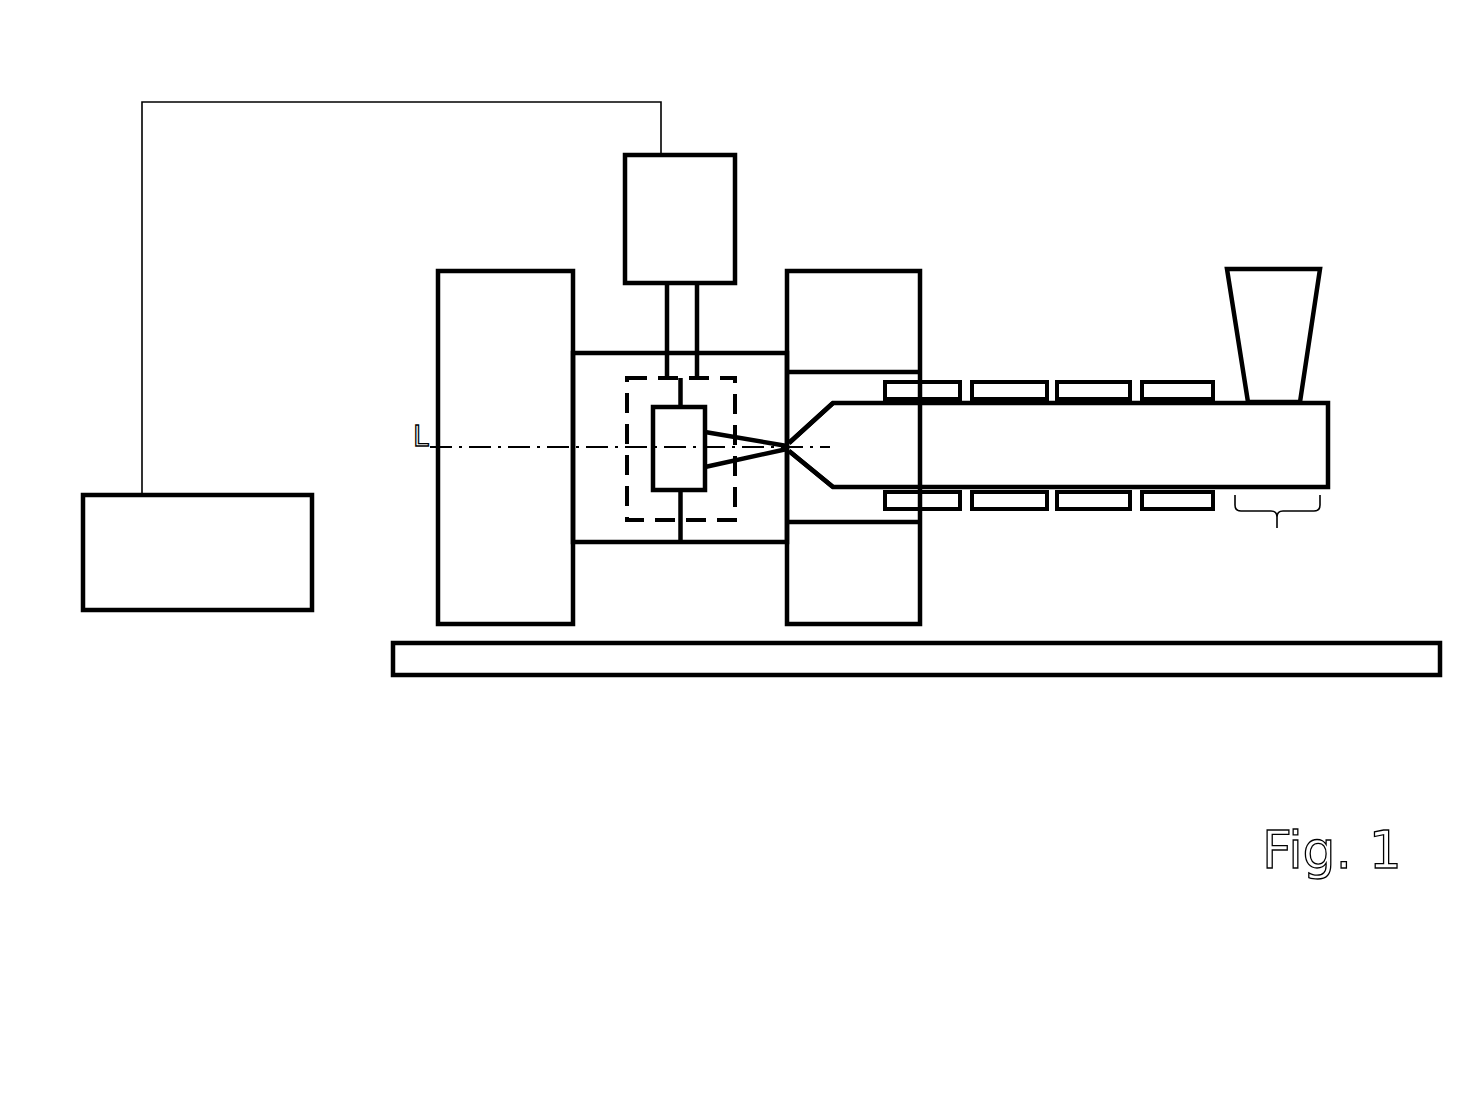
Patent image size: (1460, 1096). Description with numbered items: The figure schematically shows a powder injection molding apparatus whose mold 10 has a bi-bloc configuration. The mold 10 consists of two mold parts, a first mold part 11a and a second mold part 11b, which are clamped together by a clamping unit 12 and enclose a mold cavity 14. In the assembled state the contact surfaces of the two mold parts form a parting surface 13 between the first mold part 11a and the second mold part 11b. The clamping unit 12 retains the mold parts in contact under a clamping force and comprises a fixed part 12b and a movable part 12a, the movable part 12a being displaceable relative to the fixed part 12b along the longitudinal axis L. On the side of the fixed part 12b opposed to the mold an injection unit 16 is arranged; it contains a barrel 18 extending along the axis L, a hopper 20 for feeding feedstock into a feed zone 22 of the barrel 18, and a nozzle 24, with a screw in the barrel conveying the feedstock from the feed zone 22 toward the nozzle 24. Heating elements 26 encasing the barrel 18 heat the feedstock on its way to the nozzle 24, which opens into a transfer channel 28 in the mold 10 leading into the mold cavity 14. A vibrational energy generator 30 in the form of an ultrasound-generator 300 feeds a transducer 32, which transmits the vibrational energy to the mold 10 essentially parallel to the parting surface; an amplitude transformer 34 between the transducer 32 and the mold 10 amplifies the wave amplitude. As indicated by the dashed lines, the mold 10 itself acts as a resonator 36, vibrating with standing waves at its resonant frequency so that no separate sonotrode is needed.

The mold 10 is at (657, 390).
The first mold part 11a is at (585, 505).
The second mold part 11b is at (757, 377).
The clamping unit 12 is at (670, 385).
The movable part 12a is at (503, 293).
The fixed part 12b is at (858, 297).
The parting surface 13 is at (682, 546).
The mold cavity 14 is at (677, 417).
The injection unit 16 is at (1038, 418).
The barrel 18 is at (1135, 402).
The hopper 20 is at (1308, 348).
The feed zone 22 is at (1277, 535).
The nozzle 24 is at (820, 460).
The heating elements 26 is at (942, 500).
The transfer channel 28 is at (745, 462).
The vibrational energy generator 30 is at (197, 601).
The ultrasound-generator 300 is at (205, 609).
The transducer 32 is at (707, 195).
The amplitude transformer 34 is at (697, 330).
The resonator 36 is at (637, 413).